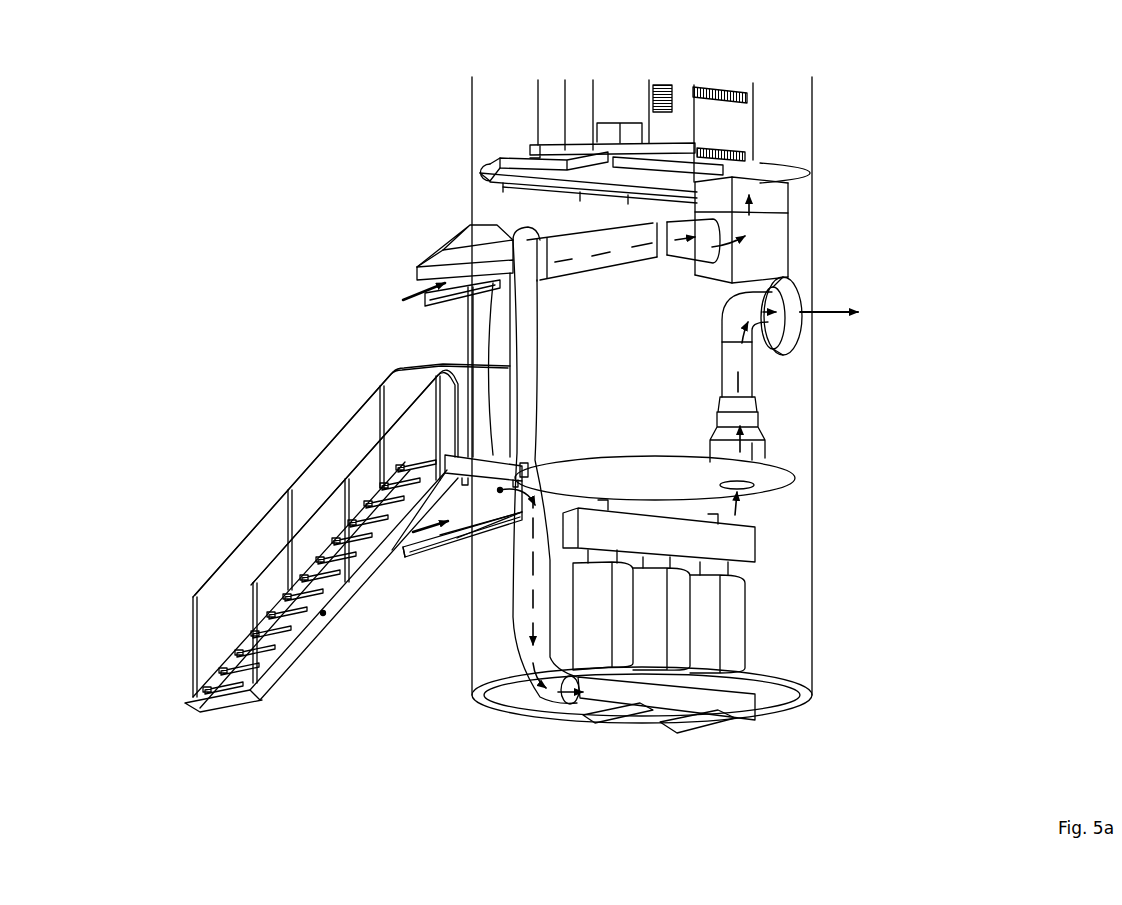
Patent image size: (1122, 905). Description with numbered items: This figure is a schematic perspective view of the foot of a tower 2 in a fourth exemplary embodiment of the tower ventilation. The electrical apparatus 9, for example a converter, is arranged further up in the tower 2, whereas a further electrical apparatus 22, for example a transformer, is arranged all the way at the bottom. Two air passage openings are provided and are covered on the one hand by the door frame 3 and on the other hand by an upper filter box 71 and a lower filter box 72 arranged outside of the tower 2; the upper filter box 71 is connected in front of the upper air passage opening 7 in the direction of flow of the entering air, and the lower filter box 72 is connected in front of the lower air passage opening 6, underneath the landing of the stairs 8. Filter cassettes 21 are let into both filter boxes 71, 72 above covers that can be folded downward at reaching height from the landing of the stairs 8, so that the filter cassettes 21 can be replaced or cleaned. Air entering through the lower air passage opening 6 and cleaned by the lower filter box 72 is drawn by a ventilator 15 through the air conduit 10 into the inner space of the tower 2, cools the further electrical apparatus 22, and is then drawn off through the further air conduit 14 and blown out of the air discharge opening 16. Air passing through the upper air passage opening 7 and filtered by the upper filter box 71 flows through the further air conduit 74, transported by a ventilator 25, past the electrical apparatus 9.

The tower 2 is at (795, 584).
The door frame 3 is at (527, 350).
The lower air passage opening 6 is at (500, 490).
The upper air passage opening 7 is at (527, 262).
The stairs 8 is at (323, 613).
The electrical apparatus 9 is at (715, 128).
The air conduit 10 is at (522, 623).
The further air conduit 14 is at (748, 377).
The ventilator 15 is at (763, 443).
The air discharge opening 16 is at (803, 300).
The filter cassettes 21 is at (473, 273).
The further electrical apparatus 22 is at (730, 588).
The ventilator 25 is at (752, 248).
The upper filter box 71 is at (457, 253).
The lower filter box 72 is at (447, 540).
The further air conduit 74 is at (620, 258).